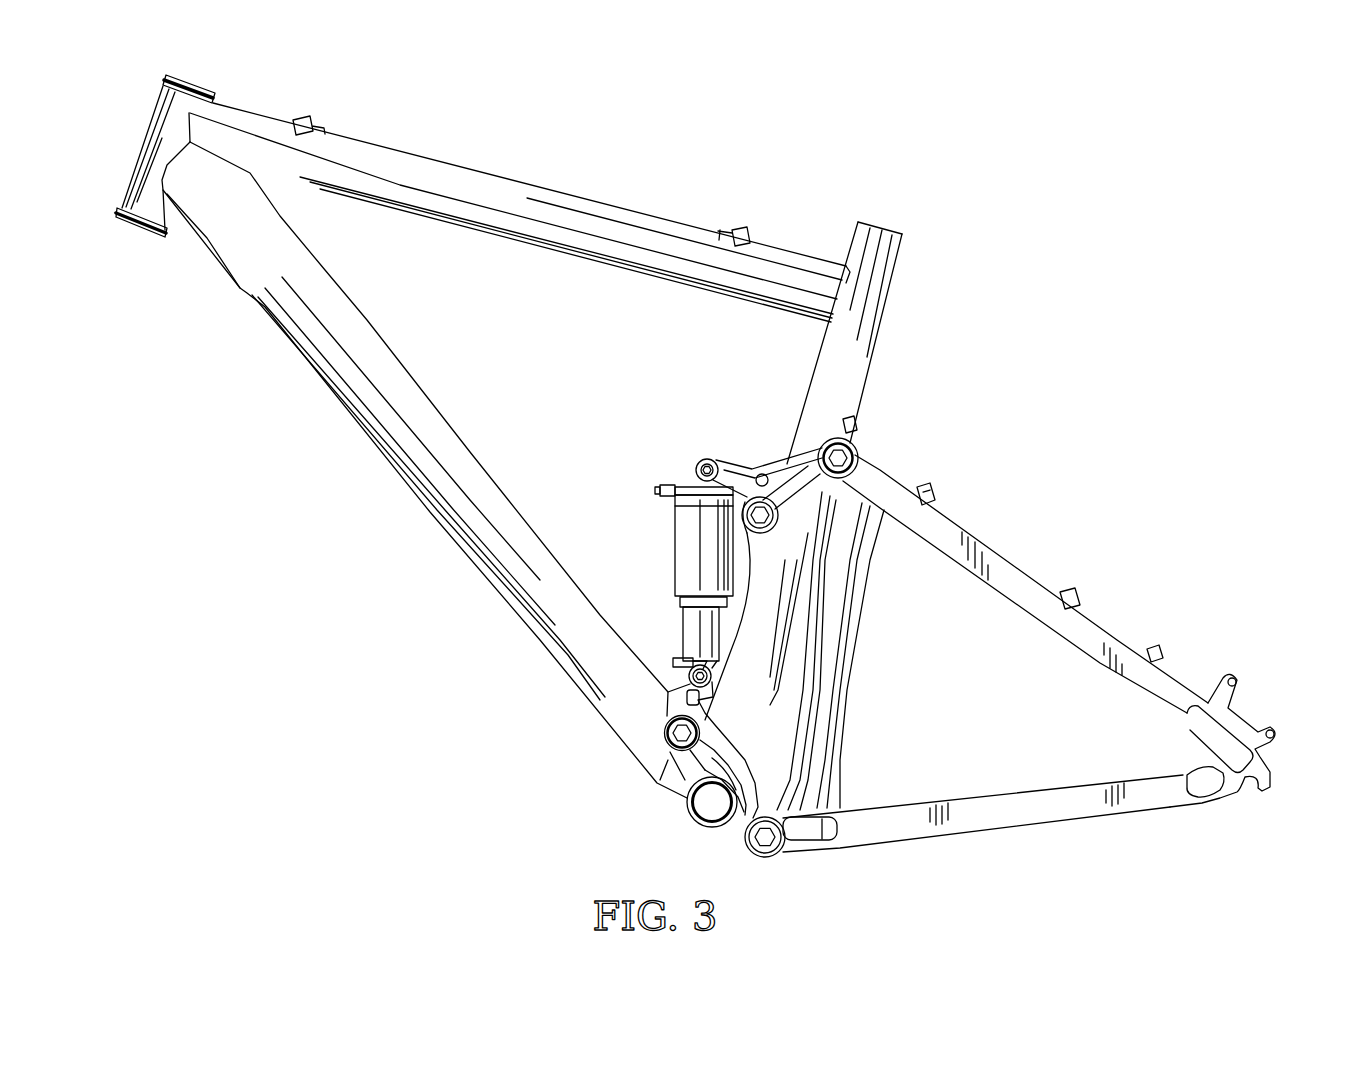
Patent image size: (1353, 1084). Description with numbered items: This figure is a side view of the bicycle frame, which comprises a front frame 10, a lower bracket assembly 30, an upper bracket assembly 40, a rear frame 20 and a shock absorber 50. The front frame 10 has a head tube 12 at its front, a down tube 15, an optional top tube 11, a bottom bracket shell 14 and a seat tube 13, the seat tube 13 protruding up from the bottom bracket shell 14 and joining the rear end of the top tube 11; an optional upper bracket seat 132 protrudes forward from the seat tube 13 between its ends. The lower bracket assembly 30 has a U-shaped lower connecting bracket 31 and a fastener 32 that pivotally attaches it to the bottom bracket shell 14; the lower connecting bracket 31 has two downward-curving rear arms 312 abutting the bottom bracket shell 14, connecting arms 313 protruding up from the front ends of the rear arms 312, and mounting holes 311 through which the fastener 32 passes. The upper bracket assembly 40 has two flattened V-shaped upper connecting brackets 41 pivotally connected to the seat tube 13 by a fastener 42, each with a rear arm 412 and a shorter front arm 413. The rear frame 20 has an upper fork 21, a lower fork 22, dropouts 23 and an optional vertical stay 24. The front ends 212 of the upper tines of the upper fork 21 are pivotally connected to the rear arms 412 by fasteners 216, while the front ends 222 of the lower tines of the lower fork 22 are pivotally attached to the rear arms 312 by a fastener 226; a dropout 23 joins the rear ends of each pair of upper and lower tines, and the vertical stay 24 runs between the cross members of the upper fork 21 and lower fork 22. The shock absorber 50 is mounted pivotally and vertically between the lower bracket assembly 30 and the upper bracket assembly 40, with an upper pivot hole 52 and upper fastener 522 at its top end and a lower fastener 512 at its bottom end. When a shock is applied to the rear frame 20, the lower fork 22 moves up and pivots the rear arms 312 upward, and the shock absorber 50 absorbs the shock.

The front frame 10 is at (598, 179).
The top tube 11 is at (363, 157).
The head tube 12 is at (161, 139).
The seat tube 13 is at (852, 348).
The upper bracket seat 132 is at (748, 535).
The bottom bracket shell 14 is at (694, 810).
The down tube 15 is at (513, 567).
The rear frame 20 is at (1058, 544).
The upper fork 21 is at (948, 530).
The front end of upper tine 212 is at (858, 462).
The fastener of upper tine 216 is at (848, 452).
The lower fork 22 is at (1037, 812).
The front end of lower tine 222 is at (795, 848).
The fastener of lower tine 226 is at (752, 840).
The dropout 23 is at (1262, 774).
The vertical stay 24 is at (836, 635).
The lower bracket assembly 30 is at (757, 718).
The lower connecting bracket 31 is at (722, 742).
The mounting hole 311 is at (668, 752).
The rear arm 312 is at (750, 778).
The connecting arm 313 is at (676, 700).
The fastener 32 is at (680, 733).
The upper bracket assembly 40 is at (770, 411).
The upper connecting bracket 41 is at (793, 483).
The rear arm of upper connecting bracket 412 is at (817, 458).
The front arm of upper connecting bracket 413 is at (722, 462).
The fastener 42 is at (777, 528).
The shock absorber 50 is at (677, 515).
The upper pivot hole 52 is at (695, 470).
The lower fastener 512 is at (690, 669).
The upper fastener 522 is at (703, 462).